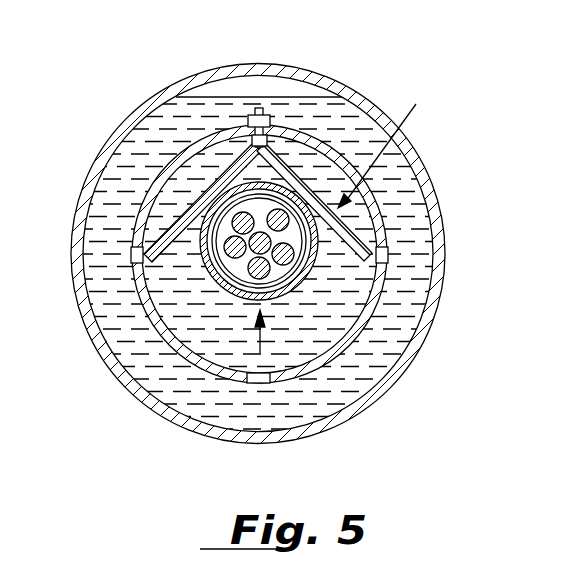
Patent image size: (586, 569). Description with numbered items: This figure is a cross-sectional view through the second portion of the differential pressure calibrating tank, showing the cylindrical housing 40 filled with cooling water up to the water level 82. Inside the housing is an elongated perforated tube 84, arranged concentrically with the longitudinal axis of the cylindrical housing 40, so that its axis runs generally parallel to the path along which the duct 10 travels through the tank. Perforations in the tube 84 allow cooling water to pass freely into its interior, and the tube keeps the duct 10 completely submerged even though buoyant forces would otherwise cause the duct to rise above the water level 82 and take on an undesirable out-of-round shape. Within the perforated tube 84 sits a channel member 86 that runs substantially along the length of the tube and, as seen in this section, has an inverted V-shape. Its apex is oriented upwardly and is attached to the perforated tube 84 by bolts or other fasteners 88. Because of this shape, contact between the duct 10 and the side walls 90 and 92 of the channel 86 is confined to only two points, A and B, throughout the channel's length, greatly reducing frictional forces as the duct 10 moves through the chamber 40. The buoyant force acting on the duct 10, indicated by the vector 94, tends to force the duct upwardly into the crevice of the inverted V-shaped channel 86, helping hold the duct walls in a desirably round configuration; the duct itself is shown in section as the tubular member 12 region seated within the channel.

The duct 10 is at (239, 299).
The inner tubes 12 is at (267, 277).
The cylindrical housing 40 is at (295, 226).
The water level 82 is at (229, 97).
The perforated tube 84 is at (316, 138).
The channel member 86 is at (367, 181).
The fasteners 88 is at (261, 110).
The side wall of the channel 90 is at (160, 251).
The side wall of the channel 92 is at (352, 256).
The buoyant force vector 94 is at (258, 344).
The contact point A is at (217, 197).
The contact point B is at (383, 143).